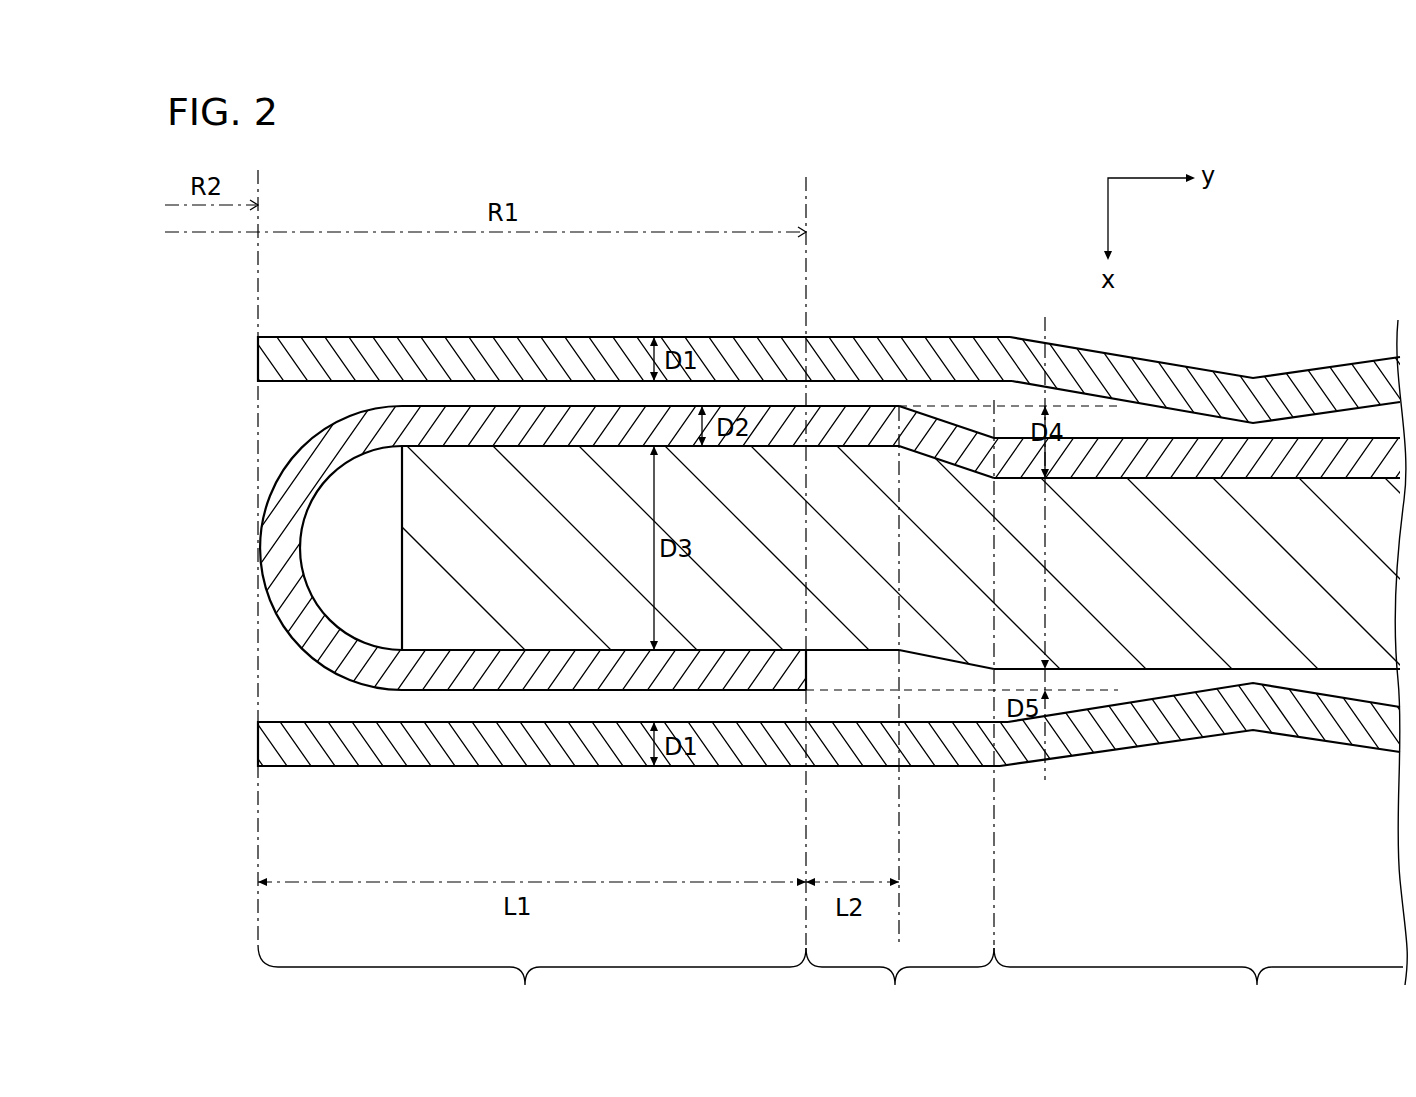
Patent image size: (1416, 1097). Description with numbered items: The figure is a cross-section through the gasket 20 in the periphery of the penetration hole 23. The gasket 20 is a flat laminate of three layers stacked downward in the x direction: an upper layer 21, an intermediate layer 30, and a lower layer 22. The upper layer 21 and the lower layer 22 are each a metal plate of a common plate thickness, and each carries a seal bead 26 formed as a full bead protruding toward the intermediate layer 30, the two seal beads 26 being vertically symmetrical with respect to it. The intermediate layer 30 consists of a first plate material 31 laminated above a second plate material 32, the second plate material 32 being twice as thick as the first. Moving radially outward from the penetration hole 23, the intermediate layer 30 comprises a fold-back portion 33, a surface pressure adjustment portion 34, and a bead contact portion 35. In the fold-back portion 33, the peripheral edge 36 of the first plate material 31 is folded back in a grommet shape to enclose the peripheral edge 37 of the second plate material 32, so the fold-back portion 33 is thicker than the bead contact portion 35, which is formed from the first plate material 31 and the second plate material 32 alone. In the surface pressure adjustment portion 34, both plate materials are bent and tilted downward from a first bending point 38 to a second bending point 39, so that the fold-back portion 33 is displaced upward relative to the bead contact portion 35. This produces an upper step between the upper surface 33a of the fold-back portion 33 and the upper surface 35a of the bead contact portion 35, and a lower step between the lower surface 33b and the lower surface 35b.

The gasket 20 is at (497, 328).
The upper layer 21 is at (258, 366).
The lower layer 22 is at (258, 755).
The penetration hole 23 is at (190, 479).
The seal bead 26 is at (1253, 378).
The intermediate layer 30 is at (250, 678).
The first plate material 31 is at (1142, 462).
The second plate material 32 is at (1132, 669).
The fold-back portion 33 is at (532, 981).
The upper surface of the fold-back portion 33a is at (561, 405).
The lower surface of the fold-back portion 33b is at (548, 690).
The surface pressure adjustment portion 34 is at (900, 982).
The bead contact portion 35 is at (1198, 982).
The upper surface of the bead contact portion 35a is at (1196, 438).
The lower surface of the bead contact portion 35b is at (1197, 670).
The peripheral edge 36 is at (807, 672).
The peripheral edge of the penetration hole of the second plate material 37 is at (402, 480).
The first bending point 38 is at (899, 405).
The second bending point 39 is at (995, 436).